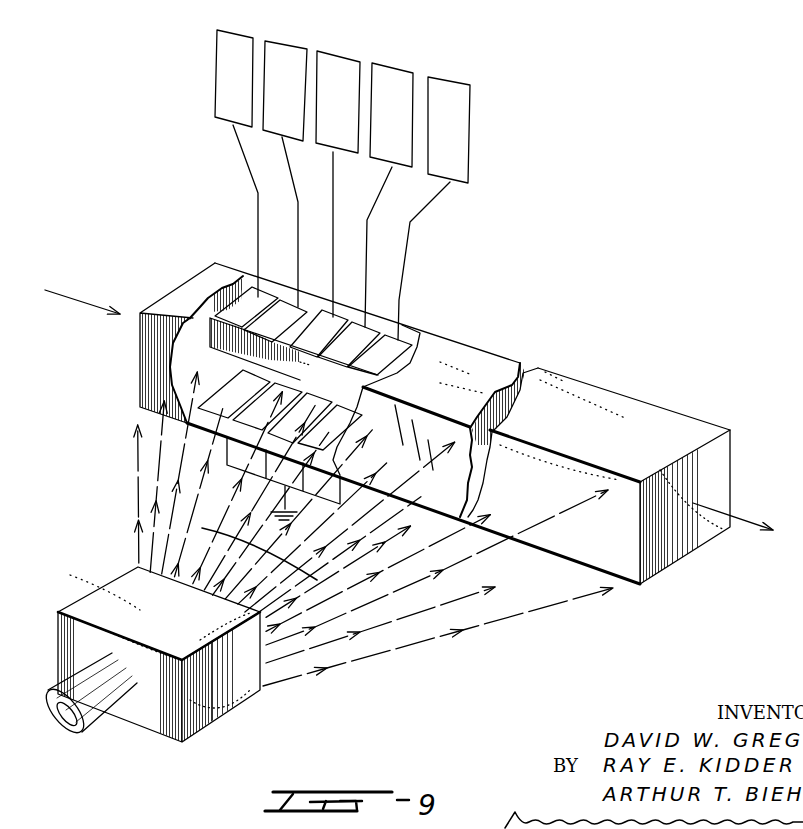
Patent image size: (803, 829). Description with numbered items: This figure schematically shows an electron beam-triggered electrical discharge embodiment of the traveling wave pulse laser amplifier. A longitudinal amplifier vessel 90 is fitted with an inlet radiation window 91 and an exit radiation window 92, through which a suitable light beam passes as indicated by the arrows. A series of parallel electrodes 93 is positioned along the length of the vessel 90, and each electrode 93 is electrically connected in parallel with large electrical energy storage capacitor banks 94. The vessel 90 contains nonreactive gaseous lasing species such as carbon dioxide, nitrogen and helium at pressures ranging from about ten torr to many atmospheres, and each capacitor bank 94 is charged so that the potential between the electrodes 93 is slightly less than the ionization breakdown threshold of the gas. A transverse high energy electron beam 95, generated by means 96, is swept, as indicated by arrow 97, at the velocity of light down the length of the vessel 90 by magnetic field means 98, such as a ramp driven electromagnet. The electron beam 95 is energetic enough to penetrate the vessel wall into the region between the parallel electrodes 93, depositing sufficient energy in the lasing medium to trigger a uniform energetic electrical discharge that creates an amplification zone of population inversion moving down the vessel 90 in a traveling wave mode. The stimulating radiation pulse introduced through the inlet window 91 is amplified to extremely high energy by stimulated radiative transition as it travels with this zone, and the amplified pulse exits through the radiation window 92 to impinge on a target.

The longitudinal amplifier vessel 90 is at (507, 343).
The inlet radiation window 91 is at (167, 352).
The exit radiation window 92 is at (722, 482).
The parallel electrodes 93 is at (395, 325).
The electrical energy storage capacitor banks 94 is at (450, 82).
The high energy electron beam 95 is at (427, 640).
The electron beam generating means 96 is at (87, 727).
The sweep arrow 97 is at (287, 549).
The magnetic field means 98 is at (222, 712).